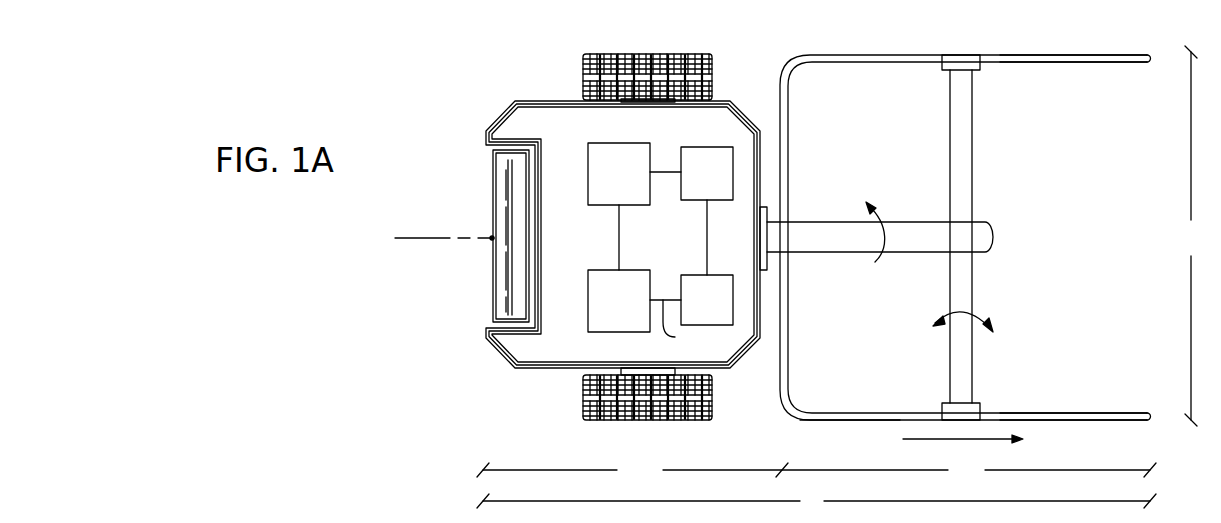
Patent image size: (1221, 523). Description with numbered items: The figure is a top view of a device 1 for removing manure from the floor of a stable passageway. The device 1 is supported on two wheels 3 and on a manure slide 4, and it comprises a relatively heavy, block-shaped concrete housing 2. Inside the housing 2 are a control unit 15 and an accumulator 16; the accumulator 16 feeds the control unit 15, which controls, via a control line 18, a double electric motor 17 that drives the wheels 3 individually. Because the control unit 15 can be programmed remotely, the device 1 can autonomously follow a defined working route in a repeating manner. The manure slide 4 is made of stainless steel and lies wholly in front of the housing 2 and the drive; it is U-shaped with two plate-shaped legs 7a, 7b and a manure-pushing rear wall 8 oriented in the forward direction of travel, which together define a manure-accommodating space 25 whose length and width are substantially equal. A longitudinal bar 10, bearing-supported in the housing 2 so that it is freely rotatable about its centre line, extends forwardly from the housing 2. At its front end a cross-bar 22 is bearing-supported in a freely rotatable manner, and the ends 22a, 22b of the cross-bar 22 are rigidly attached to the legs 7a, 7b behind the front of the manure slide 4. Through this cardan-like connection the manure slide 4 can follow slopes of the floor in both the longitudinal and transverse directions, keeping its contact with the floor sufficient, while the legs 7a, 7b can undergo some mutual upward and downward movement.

The device 1 is at (482, 371).
The housing 2 is at (656, 250).
The wheels 3 is at (590, 77).
The manure slide 4 is at (840, 415).
The leg 7a is at (1103, 416).
The leg 7b is at (1103, 59).
The rear wall 8 is at (783, 310).
The longitudinal bar 10 is at (915, 234).
The control unit 15 is at (686, 190).
The accumulator 16 is at (686, 316).
The double electric motor 17 is at (588, 172).
The control line 18 is at (684, 329).
The cross-bar 22 is at (962, 362).
The end of cross-bar 22a is at (962, 413).
The end of cross-bar 22b is at (962, 62).
The manure-accommodating space 25 is at (888, 383).